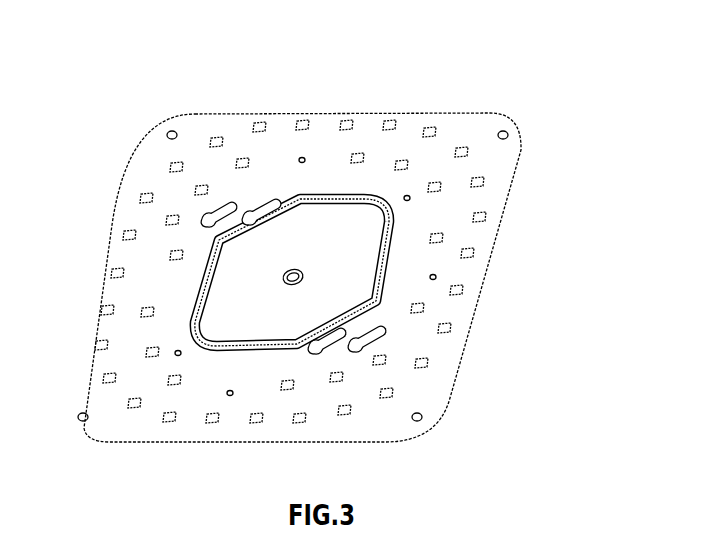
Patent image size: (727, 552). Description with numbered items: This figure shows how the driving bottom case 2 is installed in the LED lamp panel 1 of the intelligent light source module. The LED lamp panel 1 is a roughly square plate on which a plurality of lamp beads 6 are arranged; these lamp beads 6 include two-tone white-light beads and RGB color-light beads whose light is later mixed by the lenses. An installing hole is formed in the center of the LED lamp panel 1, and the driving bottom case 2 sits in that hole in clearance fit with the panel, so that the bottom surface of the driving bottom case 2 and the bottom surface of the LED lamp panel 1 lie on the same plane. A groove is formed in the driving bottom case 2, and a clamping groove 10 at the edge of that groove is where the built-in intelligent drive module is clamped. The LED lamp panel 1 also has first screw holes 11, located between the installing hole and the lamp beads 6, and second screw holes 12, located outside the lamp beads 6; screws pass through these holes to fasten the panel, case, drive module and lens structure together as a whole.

The LED lamp panel 1 is at (178, 295).
The driving bottom case 2 is at (333, 256).
The lamp bead 6 is at (202, 190).
The clamping groove 10 is at (290, 352).
The first screw hole 11 is at (265, 205).
The second screw hole 12 is at (506, 133).